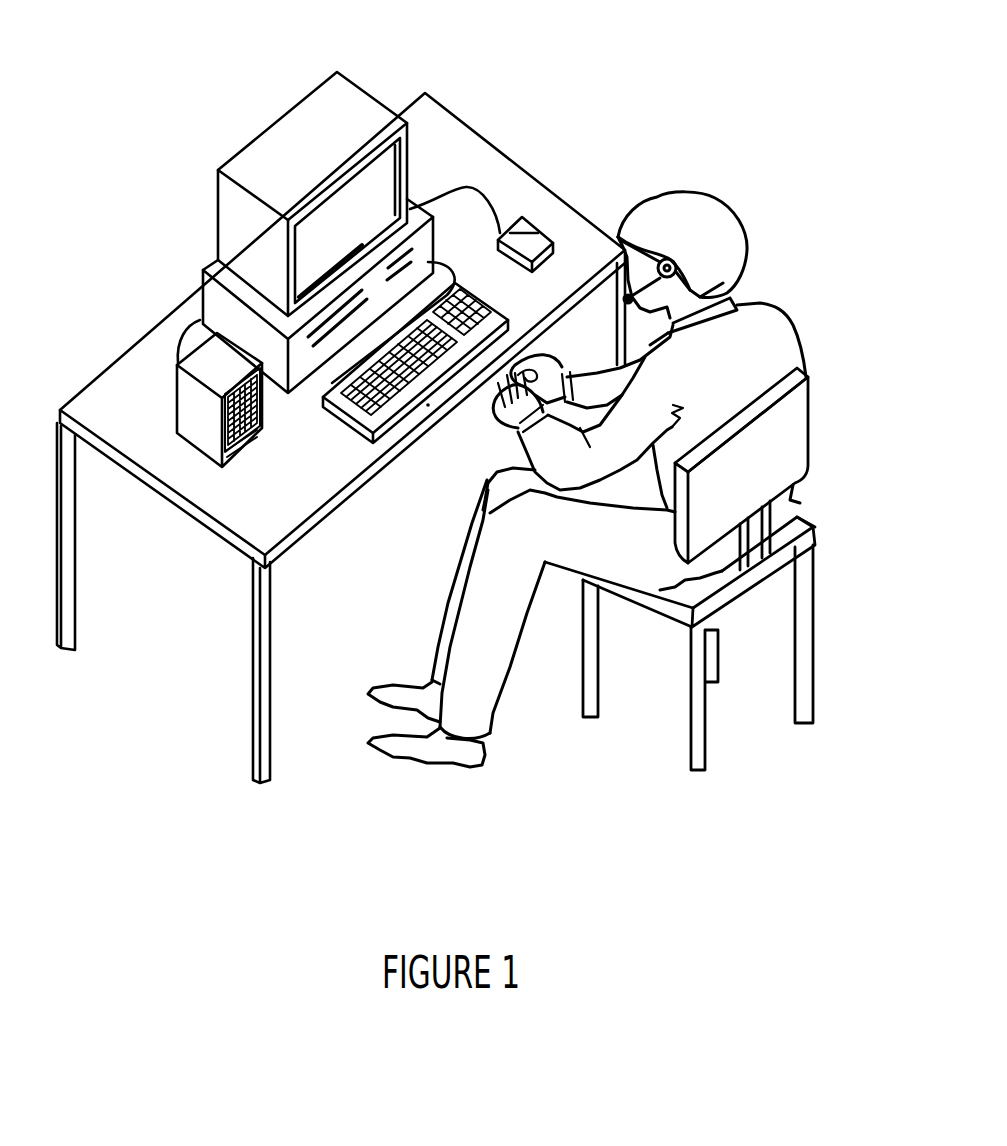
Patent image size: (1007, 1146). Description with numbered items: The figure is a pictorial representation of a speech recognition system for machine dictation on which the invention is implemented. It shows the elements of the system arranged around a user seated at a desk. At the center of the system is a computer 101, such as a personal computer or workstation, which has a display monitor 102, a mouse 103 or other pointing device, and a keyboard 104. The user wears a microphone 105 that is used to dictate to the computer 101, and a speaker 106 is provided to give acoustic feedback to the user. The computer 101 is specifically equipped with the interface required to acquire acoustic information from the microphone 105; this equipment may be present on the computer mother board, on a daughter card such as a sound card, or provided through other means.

The computer 101 is at (203, 290).
The display monitor 102 is at (350, 80).
The mouse 103 is at (538, 231).
The keyboard 104 is at (350, 436).
The microphone 105 is at (728, 295).
The speaker 106 is at (177, 383).